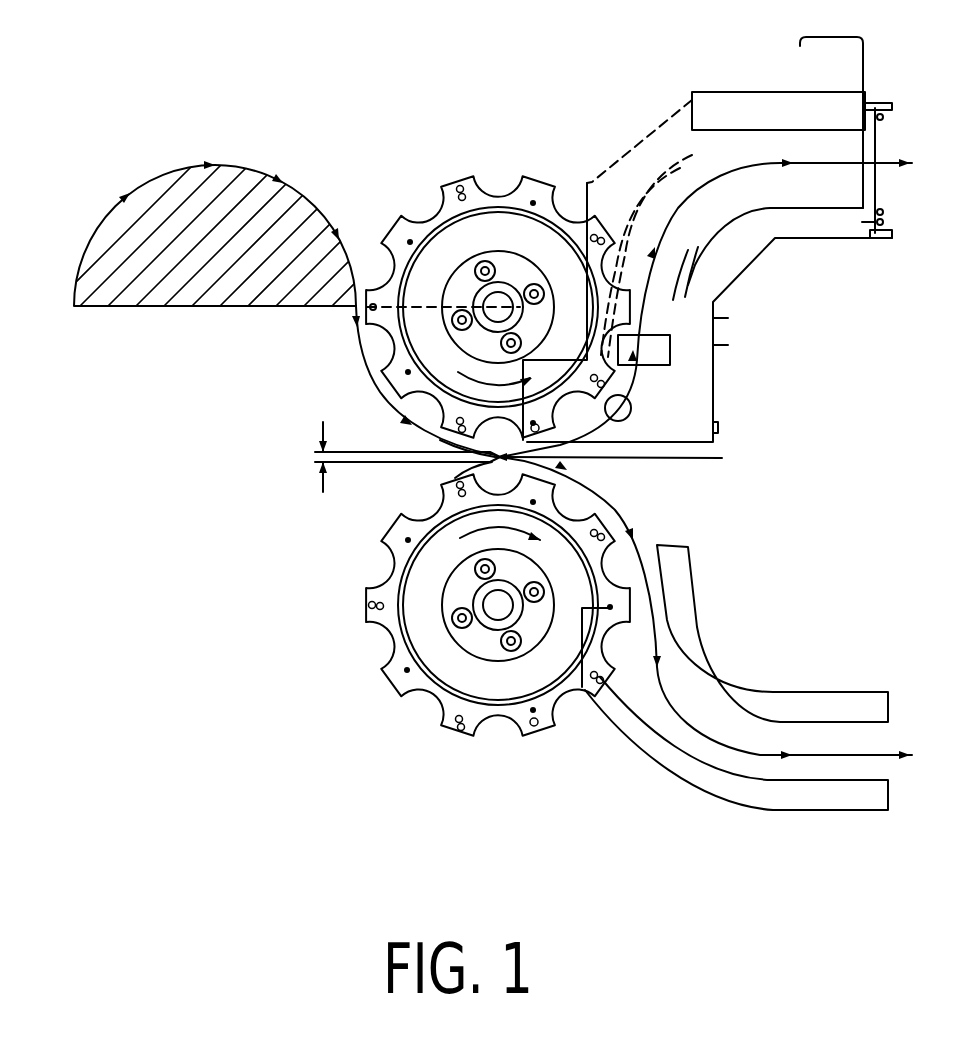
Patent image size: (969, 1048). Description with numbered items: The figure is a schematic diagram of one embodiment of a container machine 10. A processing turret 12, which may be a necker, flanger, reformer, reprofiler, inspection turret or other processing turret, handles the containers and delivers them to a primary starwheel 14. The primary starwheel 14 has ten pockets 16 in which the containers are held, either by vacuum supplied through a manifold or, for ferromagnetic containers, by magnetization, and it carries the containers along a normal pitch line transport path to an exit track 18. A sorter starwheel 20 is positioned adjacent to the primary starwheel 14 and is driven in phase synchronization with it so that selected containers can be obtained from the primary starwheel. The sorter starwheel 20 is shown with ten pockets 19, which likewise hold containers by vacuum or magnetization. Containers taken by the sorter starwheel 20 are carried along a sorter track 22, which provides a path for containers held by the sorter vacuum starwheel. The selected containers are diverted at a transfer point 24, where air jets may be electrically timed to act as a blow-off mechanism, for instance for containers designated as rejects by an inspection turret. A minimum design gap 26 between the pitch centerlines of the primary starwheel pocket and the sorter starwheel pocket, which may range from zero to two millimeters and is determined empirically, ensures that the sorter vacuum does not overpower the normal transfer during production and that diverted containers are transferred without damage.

The container machine 10 is at (132, 97).
The processing turret 12 is at (96, 243).
The primary starwheel 14 is at (453, 182).
The pockets 16 is at (478, 451).
The exit track 18 is at (690, 208).
The pockets 19 is at (458, 476).
The sorter starwheel 20 is at (493, 687).
The sorter track 22 is at (697, 720).
The transfer point 24 is at (722, 458).
The minimum design gap 26 is at (315, 455).